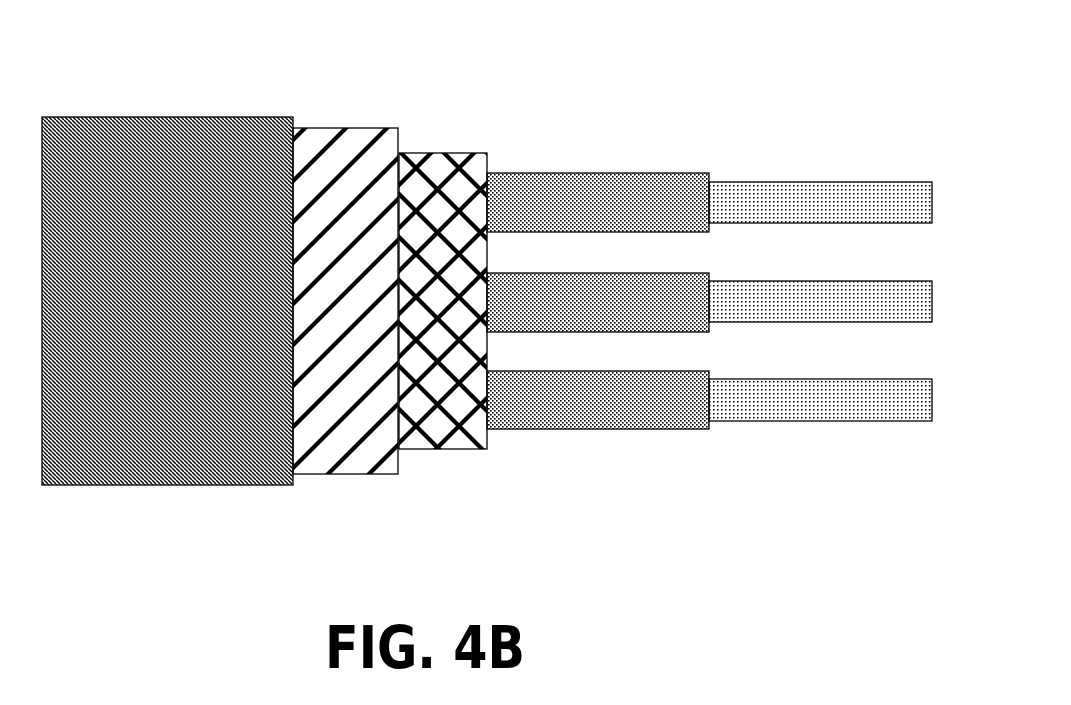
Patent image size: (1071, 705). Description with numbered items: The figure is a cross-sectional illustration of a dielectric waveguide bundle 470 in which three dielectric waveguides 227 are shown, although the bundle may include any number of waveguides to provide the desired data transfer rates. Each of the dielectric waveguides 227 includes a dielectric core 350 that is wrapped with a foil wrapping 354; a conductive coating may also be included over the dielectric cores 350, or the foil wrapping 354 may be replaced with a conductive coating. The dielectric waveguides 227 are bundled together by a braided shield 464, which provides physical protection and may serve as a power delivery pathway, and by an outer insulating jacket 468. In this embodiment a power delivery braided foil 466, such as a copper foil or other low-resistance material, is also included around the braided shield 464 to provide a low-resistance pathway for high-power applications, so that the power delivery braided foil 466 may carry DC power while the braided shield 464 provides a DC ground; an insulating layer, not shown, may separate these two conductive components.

The dielectric waveguide bundle 470 is at (152, 76).
The insulating jacket 468 is at (121, 487).
The power delivery braided foil 466 is at (345, 470).
The braided shield 464 is at (472, 443).
The dielectric waveguides 227 is at (932, 137).
The foil wrapping 354 is at (632, 428).
The dielectric core 350 is at (805, 415).